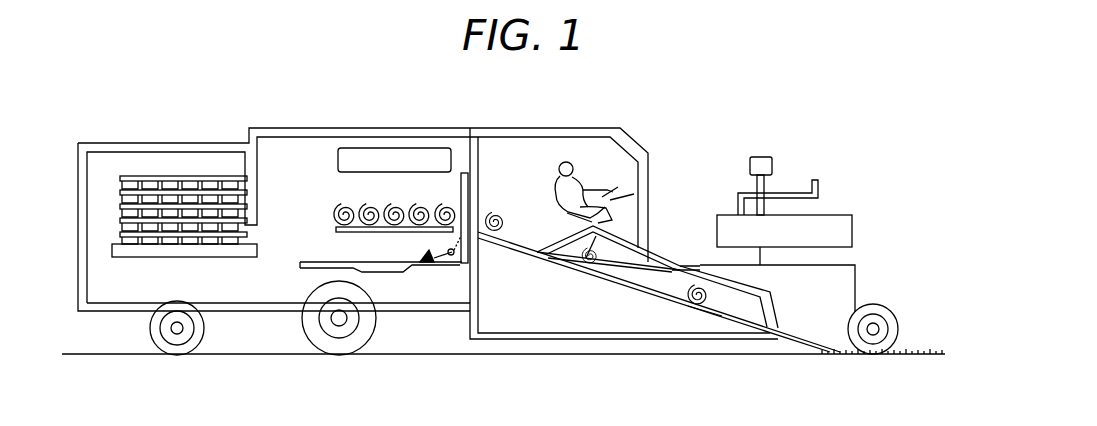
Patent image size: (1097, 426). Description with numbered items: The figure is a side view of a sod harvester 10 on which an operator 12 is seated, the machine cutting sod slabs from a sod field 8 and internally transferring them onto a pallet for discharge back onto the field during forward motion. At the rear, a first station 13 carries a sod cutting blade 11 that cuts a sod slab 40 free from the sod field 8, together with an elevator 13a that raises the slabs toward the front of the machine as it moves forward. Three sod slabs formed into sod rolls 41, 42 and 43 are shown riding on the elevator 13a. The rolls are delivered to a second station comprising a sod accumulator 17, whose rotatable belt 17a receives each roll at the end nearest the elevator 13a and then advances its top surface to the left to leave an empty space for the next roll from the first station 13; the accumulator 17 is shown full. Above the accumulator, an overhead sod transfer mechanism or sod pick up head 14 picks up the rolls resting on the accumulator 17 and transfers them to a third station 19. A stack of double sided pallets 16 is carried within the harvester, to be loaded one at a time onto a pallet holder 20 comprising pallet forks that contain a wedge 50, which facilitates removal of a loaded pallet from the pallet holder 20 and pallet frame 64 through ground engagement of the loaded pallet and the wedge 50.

The sod field 8 is at (84, 354).
The sod harvester 10 is at (662, 131).
The sod cutting blade 11 is at (848, 347).
The operator 12 is at (577, 178).
The first station 13 is at (663, 246).
The elevator 13a is at (740, 293).
The sod pick up head 14 is at (395, 158).
The stack of double sided pallets 16 is at (153, 192).
The sod accumulator 17 is at (338, 205).
The rotatable belt 17a is at (382, 232).
The third station 19 is at (318, 260).
The pallet holder 20 is at (308, 265).
The sod slab 40 is at (803, 340).
The sod roll 41 is at (693, 305).
The sod roll 42 is at (600, 240).
The sod roll 43 is at (505, 232).
The wedge 50 is at (401, 273).
The pallet frame 64 is at (462, 178).